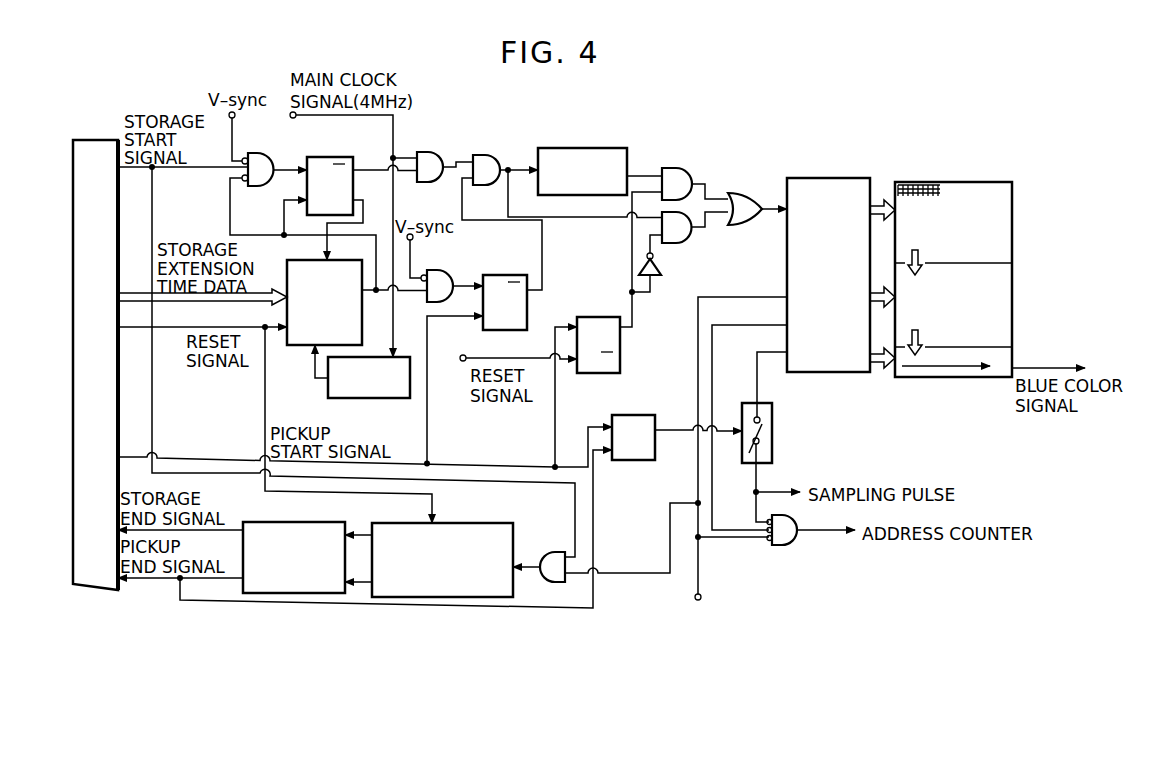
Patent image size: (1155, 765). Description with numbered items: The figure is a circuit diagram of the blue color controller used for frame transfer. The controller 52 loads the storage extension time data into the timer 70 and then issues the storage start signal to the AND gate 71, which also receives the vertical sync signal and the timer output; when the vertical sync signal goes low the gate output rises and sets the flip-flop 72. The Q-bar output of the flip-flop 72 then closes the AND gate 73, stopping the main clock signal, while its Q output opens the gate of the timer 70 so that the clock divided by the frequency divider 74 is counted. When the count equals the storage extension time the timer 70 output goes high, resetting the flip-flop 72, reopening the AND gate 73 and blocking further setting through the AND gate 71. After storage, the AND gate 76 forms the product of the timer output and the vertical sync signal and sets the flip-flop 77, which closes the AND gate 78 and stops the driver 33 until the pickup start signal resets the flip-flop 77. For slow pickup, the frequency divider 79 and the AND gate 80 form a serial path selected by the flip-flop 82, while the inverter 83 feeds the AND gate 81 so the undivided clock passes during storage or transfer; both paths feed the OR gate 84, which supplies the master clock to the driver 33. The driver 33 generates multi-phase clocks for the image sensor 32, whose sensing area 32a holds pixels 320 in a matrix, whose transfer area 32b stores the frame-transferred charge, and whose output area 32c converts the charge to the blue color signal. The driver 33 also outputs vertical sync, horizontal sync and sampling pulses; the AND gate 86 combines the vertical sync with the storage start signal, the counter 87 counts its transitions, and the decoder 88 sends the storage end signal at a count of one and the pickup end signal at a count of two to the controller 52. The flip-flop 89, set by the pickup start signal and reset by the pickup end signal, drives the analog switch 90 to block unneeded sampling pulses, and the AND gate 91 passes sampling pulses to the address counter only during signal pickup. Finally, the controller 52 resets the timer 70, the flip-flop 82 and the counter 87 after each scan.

The controller 52 is at (97, 140).
The AND gate 71 is at (260, 155).
The flip-flop 72 is at (328, 157).
The AND gate 73 is at (434, 152).
The frequency divider 74 is at (375, 357).
The timer 70 is at (285, 315).
The AND gate 76 is at (431, 298).
The flip-flop 77 is at (506, 275).
The AND gate 78 is at (487, 155).
The frequency divider 79 is at (591, 148).
The AND gate 80 is at (679, 168).
The AND gate 81 is at (684, 243).
The flip-flop 82 is at (597, 317).
The inverter 83 is at (657, 272).
The OR gate 84 is at (747, 193).
The AND gate 86 is at (553, 552).
The counter 87 is at (446, 597).
The decoder 88 is at (292, 593).
The flip-flop 89 is at (638, 415).
The analog switch 90 is at (772, 433).
The AND gate 91 is at (784, 545).
The driver 33 is at (826, 178).
The image sensor 32 is at (1014, 216).
The sensing area 32a is at (990, 185).
The transfer area 32b is at (998, 275).
The output area 32c is at (946, 378).
The pixels 320 is at (912, 182).